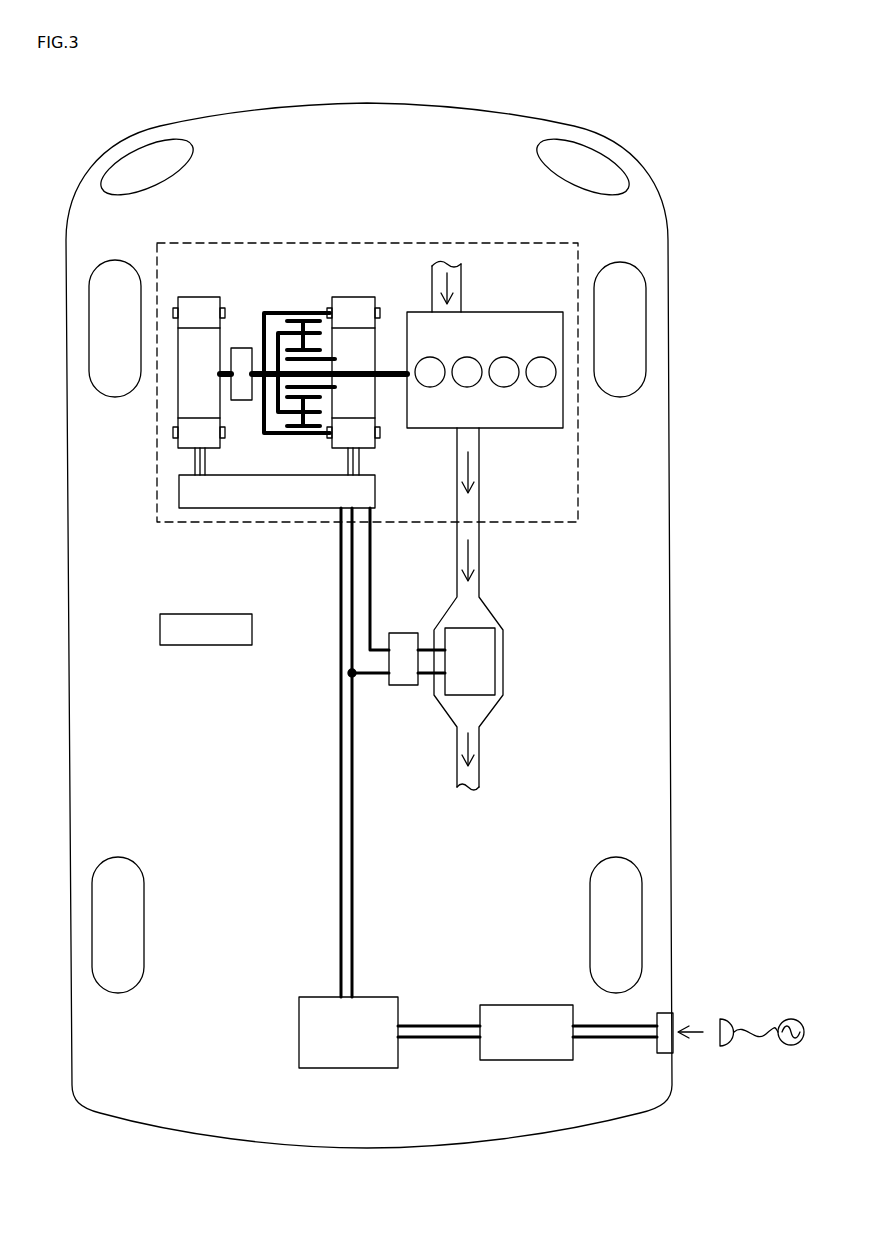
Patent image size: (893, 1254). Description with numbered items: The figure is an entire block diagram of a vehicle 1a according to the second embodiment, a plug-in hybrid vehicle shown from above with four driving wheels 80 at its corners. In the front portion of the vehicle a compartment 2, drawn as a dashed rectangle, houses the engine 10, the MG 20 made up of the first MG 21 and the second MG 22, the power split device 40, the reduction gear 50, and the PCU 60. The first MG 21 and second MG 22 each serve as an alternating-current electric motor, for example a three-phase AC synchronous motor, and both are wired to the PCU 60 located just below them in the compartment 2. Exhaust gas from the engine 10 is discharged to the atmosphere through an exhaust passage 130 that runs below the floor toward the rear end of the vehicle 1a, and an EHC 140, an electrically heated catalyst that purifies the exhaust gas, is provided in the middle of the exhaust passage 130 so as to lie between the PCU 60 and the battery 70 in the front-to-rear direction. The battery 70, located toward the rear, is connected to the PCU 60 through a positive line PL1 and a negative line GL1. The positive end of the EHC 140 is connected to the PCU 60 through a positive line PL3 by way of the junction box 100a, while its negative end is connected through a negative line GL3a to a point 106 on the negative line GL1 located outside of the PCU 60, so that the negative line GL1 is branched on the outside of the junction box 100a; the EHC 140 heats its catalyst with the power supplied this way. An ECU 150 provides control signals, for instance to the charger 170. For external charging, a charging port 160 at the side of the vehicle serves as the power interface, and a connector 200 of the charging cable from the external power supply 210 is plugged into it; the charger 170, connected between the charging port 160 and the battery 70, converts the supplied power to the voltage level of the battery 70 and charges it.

The vehicle 1a is at (355, 79).
The compartment 2 is at (357, 243).
The engine 10 is at (510, 312).
The MG (motor generator) 20 is at (276, 368).
The first MG 21 is at (350, 297).
The second MG 22 is at (203, 297).
The power split device 40 is at (292, 312).
The reduction gear 50 is at (242, 348).
The PCU (power control unit) 60 is at (376, 490).
The battery 70 is at (378, 997).
The driving wheel 80 is at (113, 259).
The junction box 100a is at (404, 633).
The point 106 is at (347, 673).
The exhaust passage 130 is at (480, 574).
The EHC (electrically heated catalyst) 140 is at (496, 660).
The ECU (electronic control unit) 150 is at (206, 650).
The charging port 160 is at (668, 1011).
The charger 170 is at (523, 1005).
The connector 200 is at (720, 1049).
The external power supply 210 is at (791, 1046).
The positive line PL1 is at (338, 831).
The negative line GL1 is at (350, 865).
The positive line PL3 is at (371, 548).
The negative line GL3a is at (366, 677).